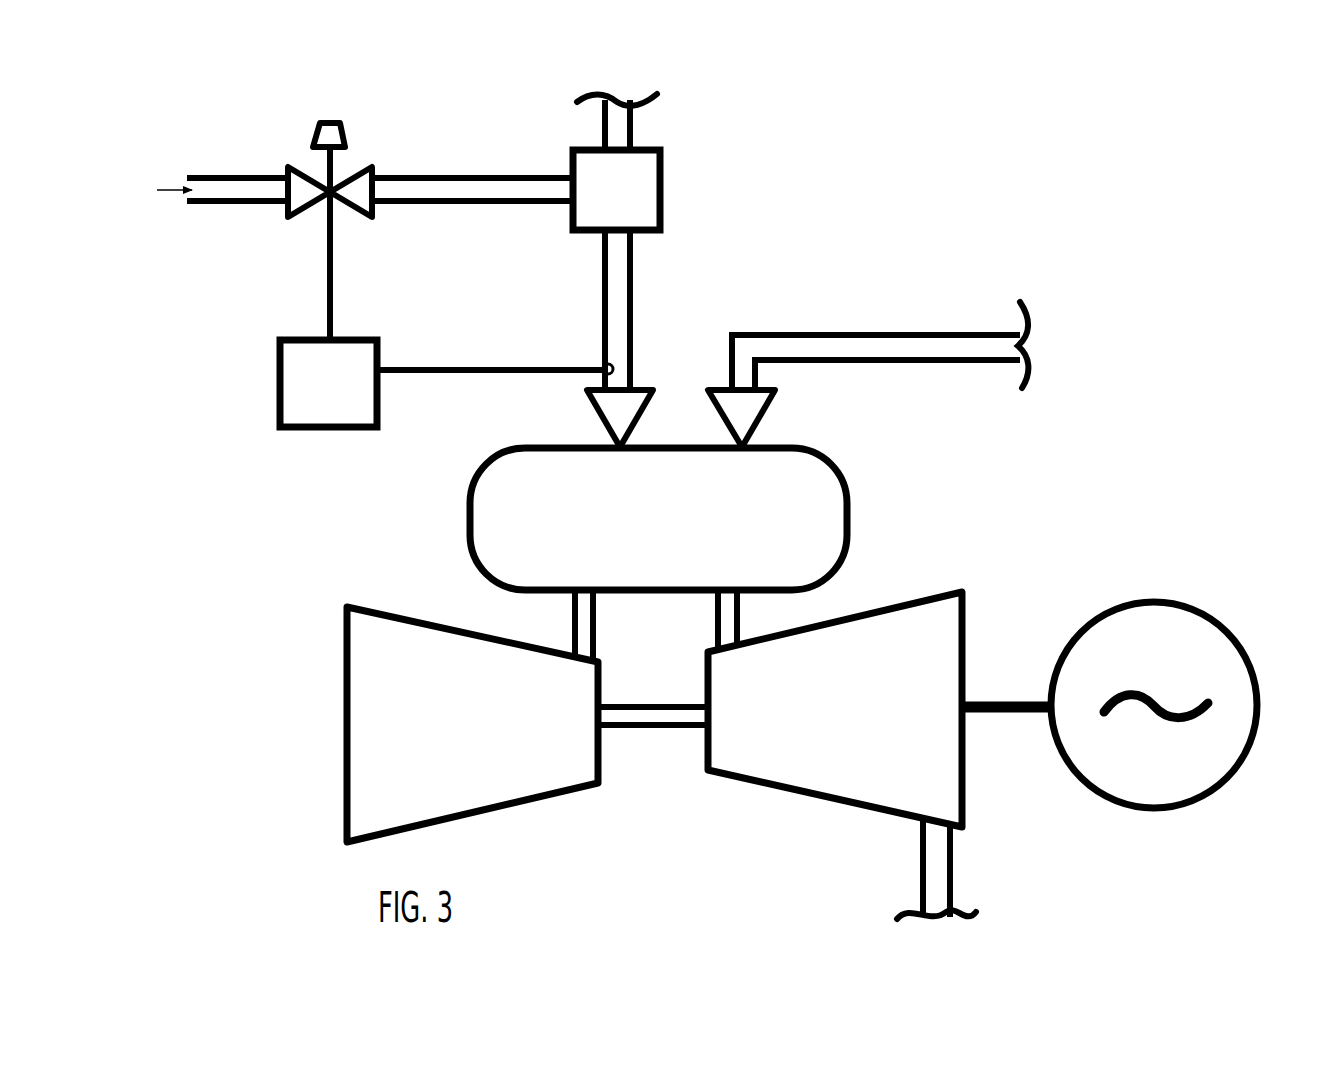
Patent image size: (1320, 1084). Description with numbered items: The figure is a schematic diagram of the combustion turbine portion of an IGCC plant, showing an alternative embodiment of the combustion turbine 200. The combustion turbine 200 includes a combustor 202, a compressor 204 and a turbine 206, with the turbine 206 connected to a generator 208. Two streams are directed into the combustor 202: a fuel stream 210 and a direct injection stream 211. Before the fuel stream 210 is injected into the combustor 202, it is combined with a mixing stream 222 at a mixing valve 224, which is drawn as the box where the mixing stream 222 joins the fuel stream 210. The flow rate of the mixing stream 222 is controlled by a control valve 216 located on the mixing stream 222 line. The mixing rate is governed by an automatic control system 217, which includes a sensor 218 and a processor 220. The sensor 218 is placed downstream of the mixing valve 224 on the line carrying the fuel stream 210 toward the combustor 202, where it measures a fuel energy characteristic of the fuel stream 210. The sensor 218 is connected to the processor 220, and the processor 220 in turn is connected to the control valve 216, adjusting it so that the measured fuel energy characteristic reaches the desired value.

The combustion turbine 200 is at (673, 882).
The combustor 202 is at (838, 459).
The compressor 204 is at (374, 720).
The turbine 206 is at (938, 589).
The generator 208 is at (1260, 661).
The fuel stream 210 is at (634, 130).
The direct injection stream 211 is at (888, 332).
The control valve 216 is at (343, 134).
The automatic control system 217 is at (308, 477).
The sensor 218 is at (602, 366).
The processor 220 is at (328, 383).
The mixing stream 222 is at (199, 177).
The mixing valve 224 is at (668, 195).